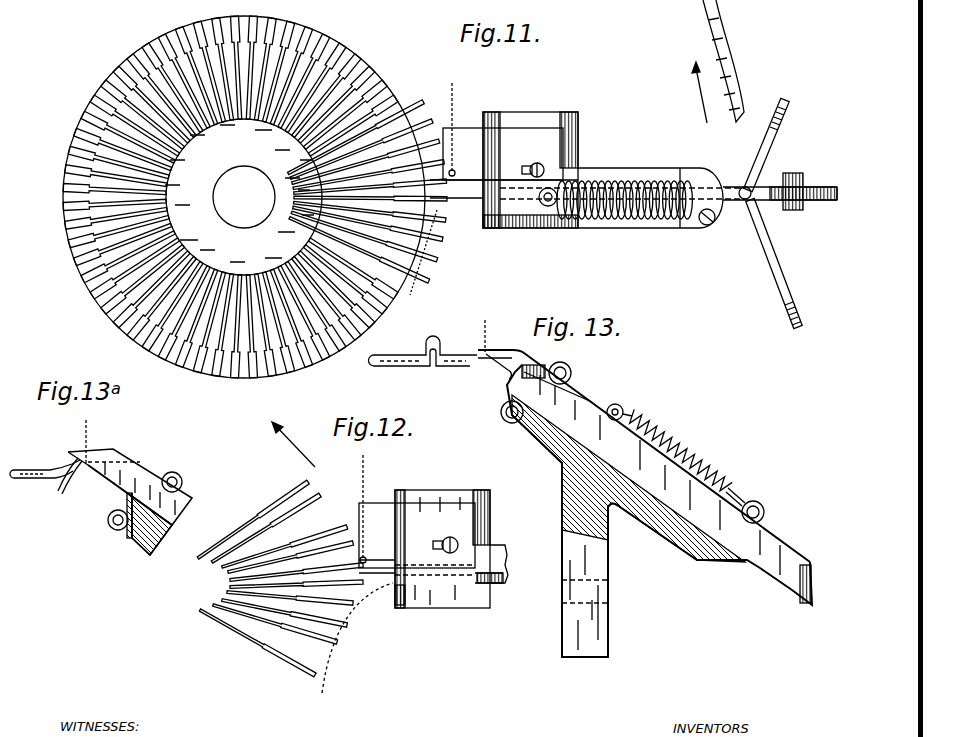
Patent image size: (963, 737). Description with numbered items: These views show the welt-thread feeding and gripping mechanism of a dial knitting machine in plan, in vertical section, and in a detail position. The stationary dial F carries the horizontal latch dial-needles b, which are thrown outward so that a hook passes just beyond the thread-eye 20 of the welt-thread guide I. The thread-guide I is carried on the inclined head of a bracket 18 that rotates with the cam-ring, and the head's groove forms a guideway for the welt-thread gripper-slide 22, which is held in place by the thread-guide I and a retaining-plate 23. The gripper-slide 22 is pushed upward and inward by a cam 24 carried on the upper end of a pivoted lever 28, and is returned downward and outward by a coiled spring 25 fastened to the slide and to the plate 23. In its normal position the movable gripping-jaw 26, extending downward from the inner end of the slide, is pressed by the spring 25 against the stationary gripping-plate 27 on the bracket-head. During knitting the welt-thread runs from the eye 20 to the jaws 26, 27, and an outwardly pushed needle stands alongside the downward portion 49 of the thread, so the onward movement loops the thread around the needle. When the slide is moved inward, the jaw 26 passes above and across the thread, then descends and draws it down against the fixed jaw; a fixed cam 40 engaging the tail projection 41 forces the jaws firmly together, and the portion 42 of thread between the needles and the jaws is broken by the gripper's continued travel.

In FIG. 11, the stationary dial F is at (72, 142).
In FIG. 11, the dial needles b is at (406, 116).
In FIG. 13, the dial needles b is at (455, 362).
In FIG. 13A, the dial needles b is at (46, 474).
In FIG. 12, the dial needles b is at (319, 493).
In FIG. 11, the welt-thread guide I is at (503, 154).
In FIG. 13, the welt-thread guide I is at (506, 352).
In FIG. 13A, the welt-thread guide I is at (149, 473).
In FIG. 12, the welt-thread guide I is at (417, 535).
In FIG. 13, the bracket 18 is at (600, 566).
In FIG. 13A, the bracket 18 is at (151, 526).
In FIG. 11, the thread-eye 20 is at (455, 172).
In FIG. 13, the thread-eye 20 is at (483, 350).
In FIG. 12, the thread-eye 20 is at (366, 560).
In FIG. 11, the welt-thread gripper-slide 22 is at (453, 198).
In FIG. 13, the welt-thread gripper-slide 22 is at (558, 393).
In FIG. 13A, the welt-thread gripper-slide 22 is at (131, 493).
In FIG. 12, the welt-thread gripper-slide 22 is at (506, 579).
In FIG. 11, the retaining-plate 23 is at (650, 198).
In FIG. 13, the retaining-plate 23 is at (765, 516).
In FIG. 11, the cam 24 is at (762, 152).
In FIG. 11, the coiled spring 25 is at (697, 226).
In FIG. 13, the coiled spring 25 is at (684, 452).
In FIG. 13, the gripping-jaw 26 is at (510, 392).
In FIG. 13A, the gripping-jaw 26 is at (75, 463).
In FIG. 13, the gripping-plate 27 is at (514, 424).
In FIG. 13A, the gripping-plate 27 is at (128, 541).
In FIG. 12, the gripping-plate 27 is at (399, 606).
In FIG. 11, the lever 28 is at (800, 206).
In FIG. 11, the fixed cam 40 is at (724, 61).
In FIG. 11, the tail projection 41 is at (780, 185).
In FIG. 13, the tail projection 41 is at (812, 601).
In FIG. 12, the welt-thread portion 42 is at (349, 630).
In FIG. 13, the welt-thread portion 49 is at (503, 372).